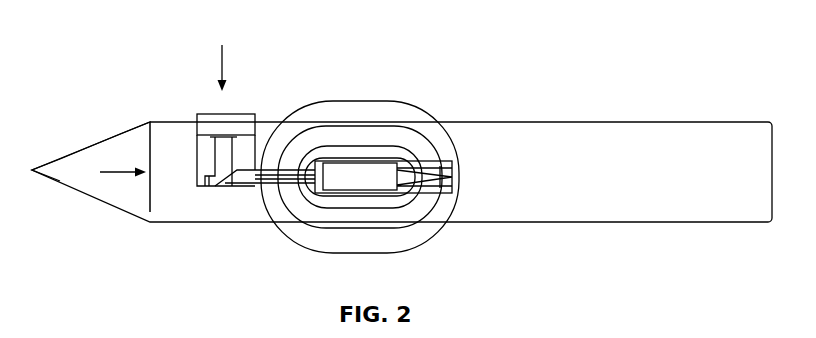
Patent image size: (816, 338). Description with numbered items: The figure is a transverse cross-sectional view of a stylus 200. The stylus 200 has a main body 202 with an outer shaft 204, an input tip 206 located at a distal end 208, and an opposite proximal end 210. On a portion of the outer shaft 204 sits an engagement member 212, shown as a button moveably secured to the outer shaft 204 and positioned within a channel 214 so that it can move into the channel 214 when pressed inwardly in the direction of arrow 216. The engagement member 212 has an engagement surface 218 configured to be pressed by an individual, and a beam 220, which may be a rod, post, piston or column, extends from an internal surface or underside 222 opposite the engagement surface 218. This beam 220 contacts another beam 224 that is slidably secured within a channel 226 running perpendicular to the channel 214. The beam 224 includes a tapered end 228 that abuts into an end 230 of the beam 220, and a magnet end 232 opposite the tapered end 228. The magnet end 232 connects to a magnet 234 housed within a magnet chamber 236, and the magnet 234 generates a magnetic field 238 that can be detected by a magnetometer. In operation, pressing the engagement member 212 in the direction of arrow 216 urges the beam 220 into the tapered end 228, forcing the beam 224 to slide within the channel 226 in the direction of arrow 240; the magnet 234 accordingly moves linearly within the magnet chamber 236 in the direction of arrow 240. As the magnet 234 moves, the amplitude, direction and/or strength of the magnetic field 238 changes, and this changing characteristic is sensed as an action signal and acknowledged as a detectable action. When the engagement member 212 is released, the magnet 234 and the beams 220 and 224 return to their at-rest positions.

The stylus 200 is at (412, 152).
The main body 202 is at (637, 122).
The outer shaft 204 is at (490, 122).
The input tip 206 is at (38, 178).
The distal end 208 is at (137, 127).
The proximal end 210 is at (755, 122).
The engagement member 212 is at (243, 114).
The channel 214 is at (197, 163).
The arrow 216 is at (224, 62).
The engagement surface 218 is at (207, 114).
The beam 220 is at (197, 150).
The underside 222 is at (256, 150).
The beam 224 is at (256, 185).
The channel 226 is at (262, 170).
The tapered end 228 is at (216, 188).
The end 230 is at (290, 127).
The magnet end 232 is at (302, 193).
The magnet 234 is at (365, 172).
The magnet chamber 236 is at (455, 177).
The magnetic field 238 is at (432, 103).
The arrow 240 is at (116, 176).